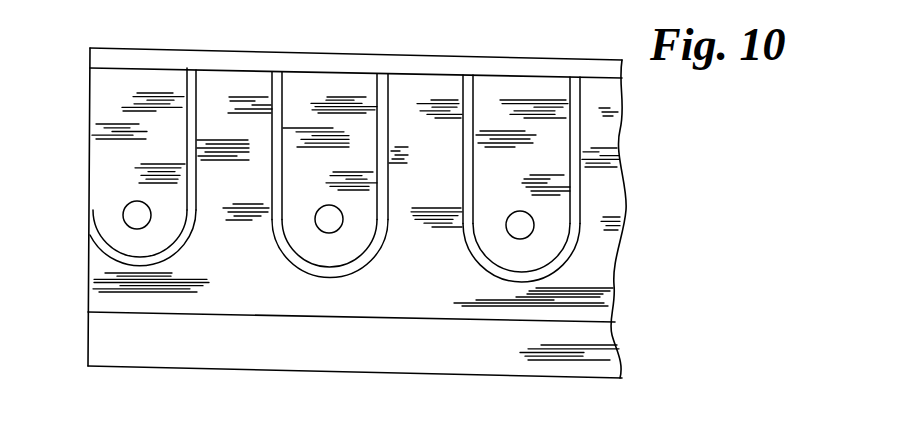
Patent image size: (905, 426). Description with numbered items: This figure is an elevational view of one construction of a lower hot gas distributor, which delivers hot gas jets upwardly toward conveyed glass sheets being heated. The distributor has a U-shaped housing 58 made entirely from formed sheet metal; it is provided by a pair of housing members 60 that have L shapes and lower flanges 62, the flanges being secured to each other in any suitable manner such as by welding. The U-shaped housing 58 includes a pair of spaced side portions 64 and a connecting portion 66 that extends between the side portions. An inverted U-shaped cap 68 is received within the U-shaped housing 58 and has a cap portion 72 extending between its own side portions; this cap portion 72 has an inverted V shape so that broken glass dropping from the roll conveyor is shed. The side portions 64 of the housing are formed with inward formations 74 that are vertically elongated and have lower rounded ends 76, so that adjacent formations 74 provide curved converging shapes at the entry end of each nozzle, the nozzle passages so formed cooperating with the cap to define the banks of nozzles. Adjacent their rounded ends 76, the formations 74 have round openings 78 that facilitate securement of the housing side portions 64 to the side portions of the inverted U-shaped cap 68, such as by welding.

The U-shaped housing 58 is at (247, 386).
The housing member 60 is at (620, 323).
The lower flange 62 is at (620, 350).
The side portion 64 is at (219, 193).
The connecting portion 66 is at (267, 314).
The inverted U-shaped cap 68 is at (158, 42).
The cap portion 72 is at (248, 62).
The inward formation 74 is at (193, 137).
The lower rounded end 76 is at (134, 268).
The round opening 78 is at (130, 220).